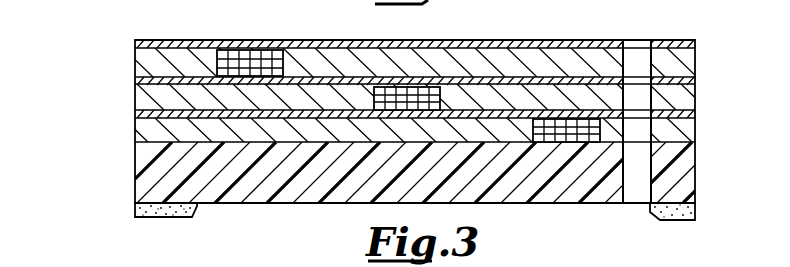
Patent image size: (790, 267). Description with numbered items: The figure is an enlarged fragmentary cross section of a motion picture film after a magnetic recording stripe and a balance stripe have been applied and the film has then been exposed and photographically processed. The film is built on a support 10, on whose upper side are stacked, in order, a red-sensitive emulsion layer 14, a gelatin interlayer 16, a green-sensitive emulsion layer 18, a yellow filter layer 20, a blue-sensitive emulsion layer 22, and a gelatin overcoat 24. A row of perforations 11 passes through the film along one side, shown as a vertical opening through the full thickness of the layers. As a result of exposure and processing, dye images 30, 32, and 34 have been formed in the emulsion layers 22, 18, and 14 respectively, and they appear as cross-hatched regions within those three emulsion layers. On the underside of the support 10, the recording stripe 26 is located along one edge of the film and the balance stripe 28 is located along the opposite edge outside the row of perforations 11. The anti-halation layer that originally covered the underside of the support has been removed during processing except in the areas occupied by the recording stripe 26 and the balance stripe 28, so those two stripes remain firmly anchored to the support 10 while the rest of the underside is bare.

The support 10 is at (145, 173).
The row of perforations 11 is at (637, 65).
The red-sensitive emulsion layer 14 is at (145, 130).
The gelatin interlayer 16 is at (135, 114).
The green-sensitive emulsion layer 18 is at (136, 96).
The yellow filter layer 20 is at (135, 80).
The blue-sensitive emulsion layer 22 is at (146, 61).
The gelatin overcoat 24 is at (135, 42).
The recording stripe 26 is at (163, 217).
The balance stripe 28 is at (673, 220).
The dye image 30 is at (218, 57).
The dye image 32 is at (374, 98).
The dye image 34 is at (533, 127).